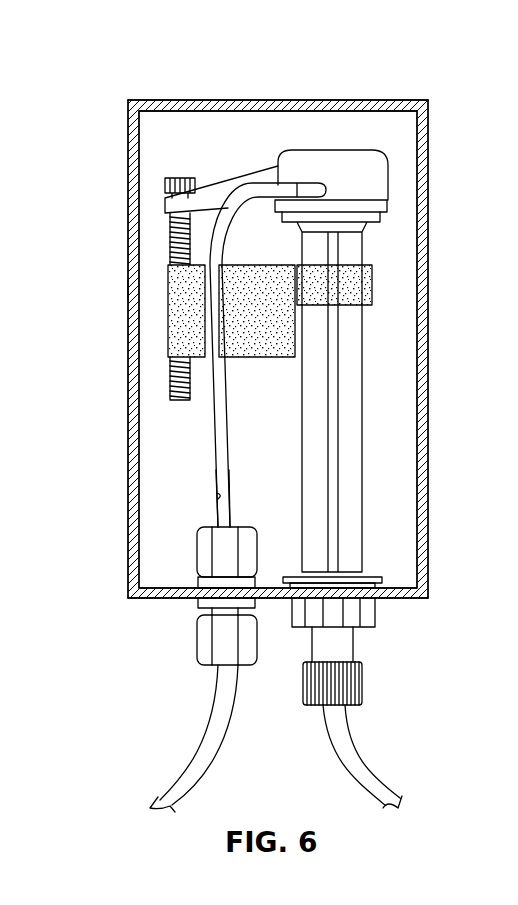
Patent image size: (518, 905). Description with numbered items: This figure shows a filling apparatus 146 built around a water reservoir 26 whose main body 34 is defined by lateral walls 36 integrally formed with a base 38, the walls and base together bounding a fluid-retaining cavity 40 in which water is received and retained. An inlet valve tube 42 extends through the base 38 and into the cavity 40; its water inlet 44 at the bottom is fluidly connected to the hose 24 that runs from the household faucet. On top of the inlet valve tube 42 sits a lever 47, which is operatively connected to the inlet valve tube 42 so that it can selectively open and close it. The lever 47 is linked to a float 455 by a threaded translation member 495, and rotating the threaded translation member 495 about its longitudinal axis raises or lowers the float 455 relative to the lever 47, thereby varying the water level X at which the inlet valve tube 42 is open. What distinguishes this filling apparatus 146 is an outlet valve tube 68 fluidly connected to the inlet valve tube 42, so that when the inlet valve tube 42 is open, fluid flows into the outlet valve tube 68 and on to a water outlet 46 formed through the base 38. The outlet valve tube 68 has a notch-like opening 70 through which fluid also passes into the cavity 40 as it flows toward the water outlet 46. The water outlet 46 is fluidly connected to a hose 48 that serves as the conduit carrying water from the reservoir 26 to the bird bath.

The filling apparatus 146 is at (113, 72).
The hose 24 is at (380, 775).
The water reservoir 26 is at (423, 238).
The main body 34 is at (428, 100).
The lateral walls 36 is at (130, 347).
The base 38 is at (418, 598).
The fluid-retaining cavity 40 is at (341, 125).
The inlet valve tube 42 is at (297, 195).
The water inlet 44 is at (335, 590).
The water outlet 46 is at (225, 595).
The lever 47 is at (224, 190).
The hose 48 is at (172, 777).
The outlet valve tube 68 is at (210, 432).
The opening 70 is at (220, 497).
The float 455 is at (244, 348).
The threaded translation member 495 is at (170, 232).
The water level X is at (116, 292).